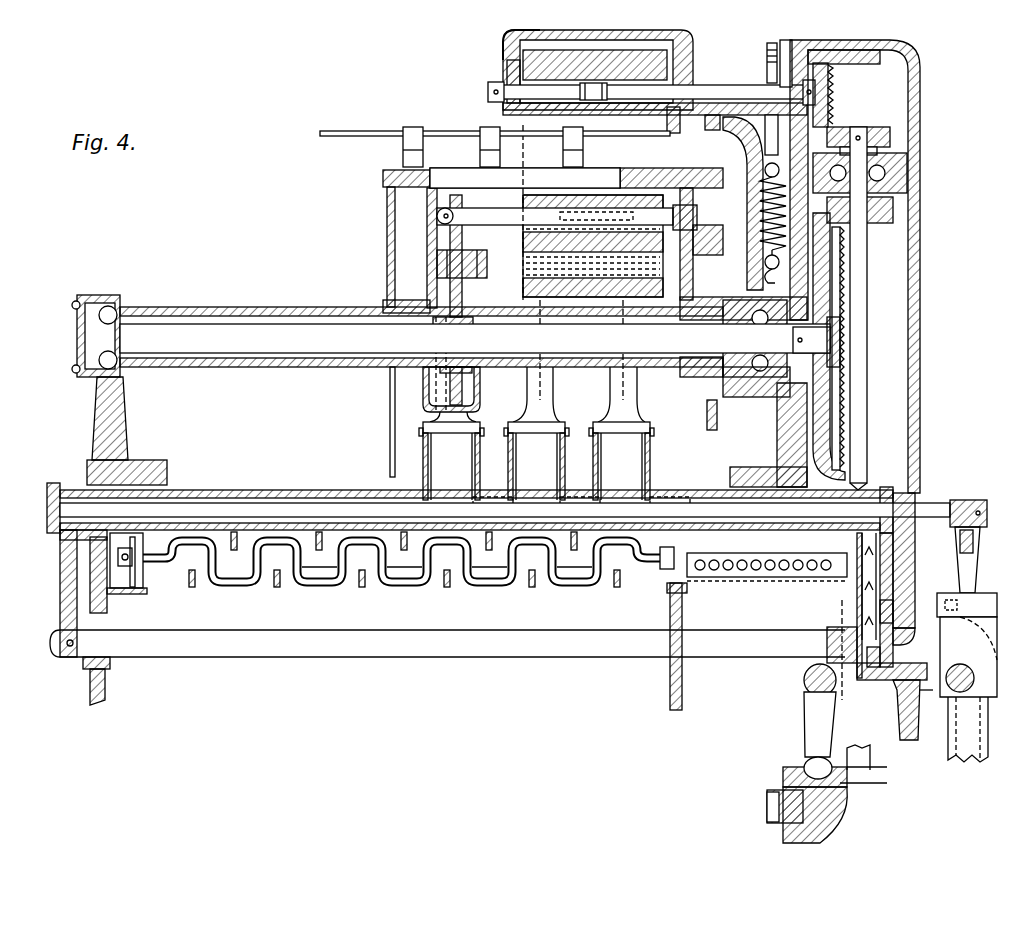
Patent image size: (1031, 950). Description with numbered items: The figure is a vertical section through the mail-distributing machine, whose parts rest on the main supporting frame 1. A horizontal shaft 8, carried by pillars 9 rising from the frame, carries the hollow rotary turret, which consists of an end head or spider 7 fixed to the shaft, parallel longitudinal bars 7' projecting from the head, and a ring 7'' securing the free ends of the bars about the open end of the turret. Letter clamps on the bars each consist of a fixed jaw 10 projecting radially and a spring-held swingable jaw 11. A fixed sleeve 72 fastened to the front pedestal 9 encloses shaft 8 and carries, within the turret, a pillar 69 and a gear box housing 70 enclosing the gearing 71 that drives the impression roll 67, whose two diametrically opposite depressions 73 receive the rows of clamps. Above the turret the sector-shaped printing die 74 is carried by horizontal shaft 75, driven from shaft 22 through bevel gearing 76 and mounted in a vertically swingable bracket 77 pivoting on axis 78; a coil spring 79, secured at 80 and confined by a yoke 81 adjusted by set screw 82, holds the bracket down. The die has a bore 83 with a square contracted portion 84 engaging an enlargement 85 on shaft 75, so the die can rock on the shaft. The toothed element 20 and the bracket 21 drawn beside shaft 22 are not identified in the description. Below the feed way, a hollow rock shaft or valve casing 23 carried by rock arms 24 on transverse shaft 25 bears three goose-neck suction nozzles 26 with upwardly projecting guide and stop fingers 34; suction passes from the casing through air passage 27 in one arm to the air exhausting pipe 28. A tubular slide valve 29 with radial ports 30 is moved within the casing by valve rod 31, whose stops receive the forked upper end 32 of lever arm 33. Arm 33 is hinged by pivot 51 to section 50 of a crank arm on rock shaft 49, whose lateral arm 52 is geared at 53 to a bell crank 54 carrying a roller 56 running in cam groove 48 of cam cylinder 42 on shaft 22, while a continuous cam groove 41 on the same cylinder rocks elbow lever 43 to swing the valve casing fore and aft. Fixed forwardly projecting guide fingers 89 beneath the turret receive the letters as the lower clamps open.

The main supporting frame 1 is at (106, 675).
The end head or spider 7 is at (595, 311).
The longitudinal bars 7' is at (525, 166).
The ring 7'' is at (372, 332).
The horizontal shaft 8 is at (480, 342).
The standards or pillars 9 is at (126, 420).
The fixed jaw 10 is at (423, 155).
The swingable jaw 11 is at (413, 130).
The worm gear 20 is at (843, 415).
The bracket 21 is at (874, 223).
The shaft 22 is at (867, 312).
The hollow rock shaft or valve casing 23 is at (297, 487).
The rock arms 24 is at (60, 600).
The transverse shaft 25 is at (405, 630).
The suction nozzle 26 is at (536, 461).
The air passage 27 is at (862, 605).
The air exhausting pipe 28 is at (968, 729).
The slide valve or cut-off 29 is at (607, 526).
The radial ports 30 is at (488, 497).
The valve rod 31 is at (935, 503).
The forked upper end 32 is at (973, 540).
The lever arm 33 is at (974, 565).
The letter guide and stop fingers 34 is at (610, 393).
The cam groove 41 is at (787, 820).
The cam cylinder 42 is at (787, 775).
The elbow lever 43 is at (767, 795).
The cam groove 48 is at (863, 783).
The rock shaft 49 is at (975, 675).
The crank arm section 50 is at (977, 648).
The hinge or pivot 51 is at (990, 597).
The lateral arm 52 is at (933, 690).
The gearing 53 is at (912, 683).
The bell crank 54 is at (805, 705).
The roller 56 is at (812, 765).
The impression roll 67 is at (650, 240).
The pillar 69 is at (700, 220).
The gear box housing 70 is at (440, 262).
The gearing 71 is at (452, 300).
The housing or sleeve 72 is at (258, 318).
The concaved depressions 73 is at (593, 246).
The printing die 74 is at (680, 44).
The horizontal shaft 75 is at (740, 100).
The bevel gearing 76 is at (842, 127).
The hanger or bracket 77 is at (512, 34).
The horizontal axis 78 is at (767, 73).
The coil spring 79 is at (765, 172).
The spring anchorage 80 is at (765, 265).
The yoke 81 is at (786, 45).
The set screw 82 is at (784, 45).
The bore 83 is at (523, 70).
The contracted portion 84 is at (595, 65).
The enlargement 85 is at (598, 100).
The guide fingers 89 is at (488, 545).